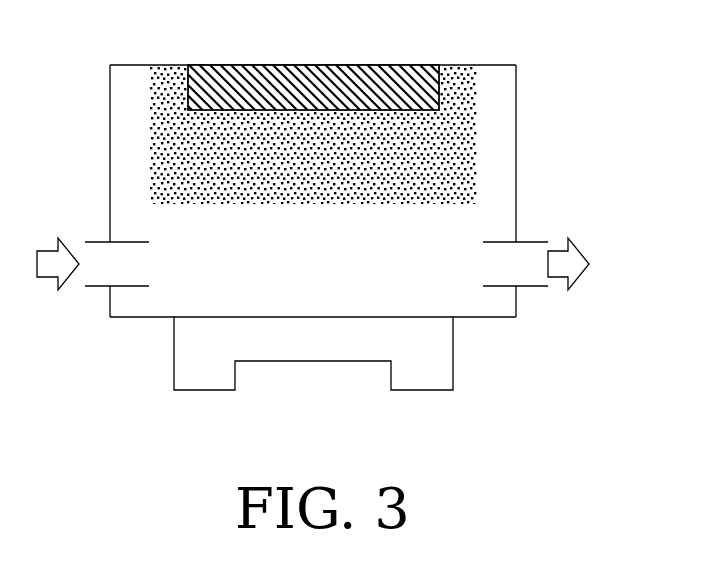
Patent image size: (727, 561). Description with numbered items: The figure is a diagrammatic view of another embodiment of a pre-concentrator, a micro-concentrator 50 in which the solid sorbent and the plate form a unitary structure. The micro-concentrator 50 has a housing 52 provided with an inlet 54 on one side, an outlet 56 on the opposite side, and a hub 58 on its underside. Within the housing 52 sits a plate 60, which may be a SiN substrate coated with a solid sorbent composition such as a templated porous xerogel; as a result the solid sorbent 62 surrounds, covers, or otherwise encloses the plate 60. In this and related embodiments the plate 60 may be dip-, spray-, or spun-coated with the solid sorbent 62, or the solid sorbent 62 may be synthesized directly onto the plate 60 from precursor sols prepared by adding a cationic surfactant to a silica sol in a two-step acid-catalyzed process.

The micro-concentrator 50 is at (556, 91).
The housing 52 is at (110, 139).
The inlet 54 is at (143, 223).
The outlet 56 is at (501, 241).
The hub 58 is at (174, 352).
The plate 60 is at (188, 110).
The solid sorbent 62 is at (477, 148).